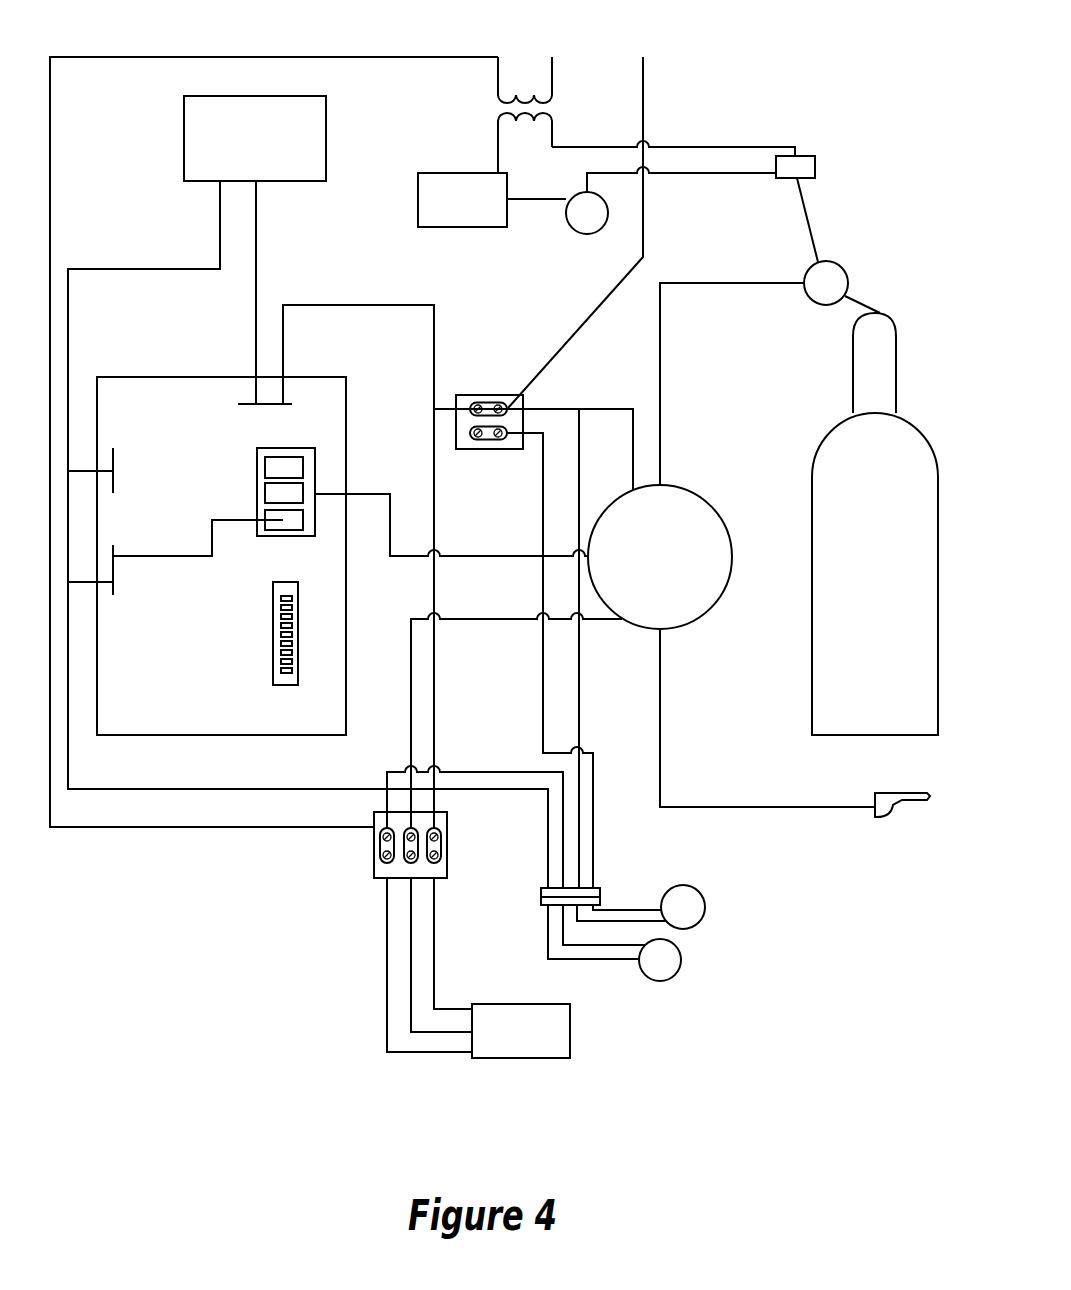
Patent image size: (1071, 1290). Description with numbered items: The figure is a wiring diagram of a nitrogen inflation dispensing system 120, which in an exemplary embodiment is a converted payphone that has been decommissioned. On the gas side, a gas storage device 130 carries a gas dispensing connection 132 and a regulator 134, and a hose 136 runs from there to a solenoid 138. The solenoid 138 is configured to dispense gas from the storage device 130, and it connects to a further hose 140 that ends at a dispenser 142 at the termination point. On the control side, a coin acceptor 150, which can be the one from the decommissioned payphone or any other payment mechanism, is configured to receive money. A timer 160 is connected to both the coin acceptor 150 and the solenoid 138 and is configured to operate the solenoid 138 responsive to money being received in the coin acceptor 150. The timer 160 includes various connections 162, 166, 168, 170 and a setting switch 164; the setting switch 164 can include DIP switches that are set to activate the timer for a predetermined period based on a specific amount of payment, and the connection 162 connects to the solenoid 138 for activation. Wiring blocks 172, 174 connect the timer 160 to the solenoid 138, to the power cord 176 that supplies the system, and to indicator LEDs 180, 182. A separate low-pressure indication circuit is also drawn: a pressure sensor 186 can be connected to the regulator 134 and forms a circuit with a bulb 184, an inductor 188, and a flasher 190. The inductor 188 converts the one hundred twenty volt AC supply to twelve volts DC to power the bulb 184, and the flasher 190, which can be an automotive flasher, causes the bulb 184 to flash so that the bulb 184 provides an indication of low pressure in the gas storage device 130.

The dispensing system 120 is at (846, 52).
The gas storage device 130 is at (812, 537).
The gas dispensing connection 132 is at (880, 313).
The regulator 134 is at (828, 262).
The hose 136 is at (713, 282).
The solenoid 138 is at (724, 595).
The hose 140 is at (732, 807).
The dispenser 142 is at (893, 805).
The coin acceptor 150 is at (326, 138).
The timer 160 is at (143, 377).
The connection 162 is at (257, 495).
The setting switch 164 is at (272, 632).
The connection 166 is at (263, 405).
The connection 168 is at (117, 458).
The connection 170 is at (117, 570).
The wiring block 172 is at (488, 395).
The wiring block 174 is at (374, 848).
The power cord 176 is at (521, 1058).
The indicator LED 180 is at (660, 981).
The indicator LED 182 is at (683, 885).
The bulb 184 is at (571, 231).
The pressure sensor 186 is at (808, 156).
The inductor 188 is at (550, 86).
The flasher 190 is at (462, 227).